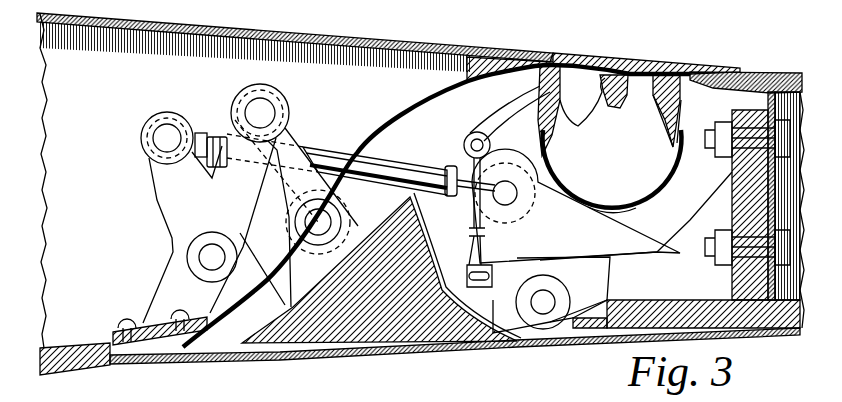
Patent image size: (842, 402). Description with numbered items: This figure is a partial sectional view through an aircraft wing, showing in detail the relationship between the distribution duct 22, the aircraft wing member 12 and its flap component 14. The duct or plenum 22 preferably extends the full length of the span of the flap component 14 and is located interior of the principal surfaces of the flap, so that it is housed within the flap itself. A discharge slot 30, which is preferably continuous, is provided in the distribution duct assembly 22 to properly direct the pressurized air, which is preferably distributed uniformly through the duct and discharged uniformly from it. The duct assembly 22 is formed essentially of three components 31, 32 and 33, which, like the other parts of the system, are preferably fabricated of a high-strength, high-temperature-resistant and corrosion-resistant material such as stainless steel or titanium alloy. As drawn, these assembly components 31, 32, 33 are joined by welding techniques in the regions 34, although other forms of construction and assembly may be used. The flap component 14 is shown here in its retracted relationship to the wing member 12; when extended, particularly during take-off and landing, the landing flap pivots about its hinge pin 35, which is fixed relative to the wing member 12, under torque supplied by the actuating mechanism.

The aircraft wing member 12 is at (348, 32).
The flap component 14 is at (774, 66).
The distribution duct 22 is at (621, 221).
The discharge slot 30 is at (602, 85).
The duct assembly component 31 is at (558, 132).
The duct assembly component 32 is at (612, 210).
The duct assembly component 33 is at (664, 127).
The welding regions 34 is at (545, 143).
The hinge pin 35 is at (546, 312).